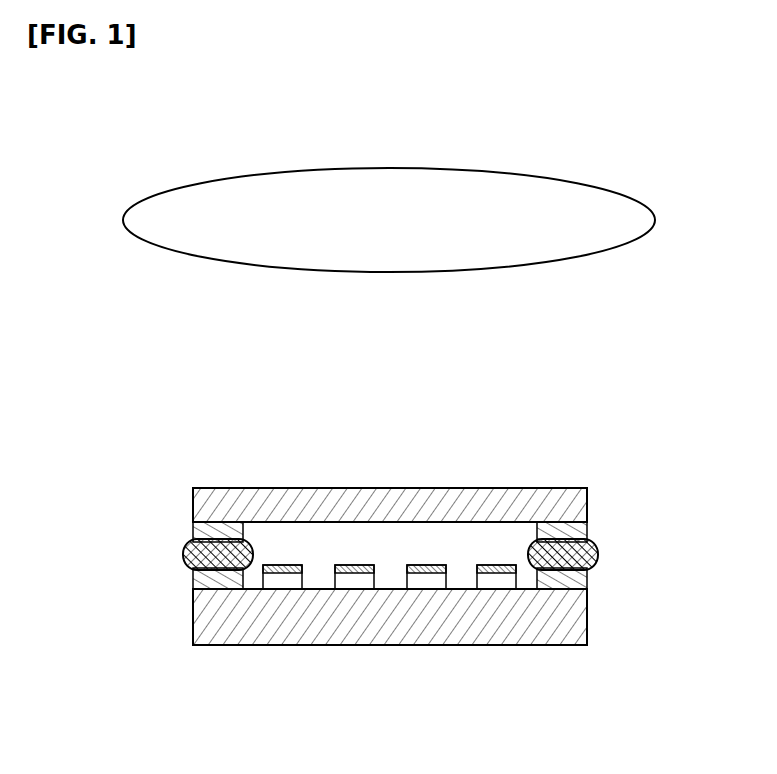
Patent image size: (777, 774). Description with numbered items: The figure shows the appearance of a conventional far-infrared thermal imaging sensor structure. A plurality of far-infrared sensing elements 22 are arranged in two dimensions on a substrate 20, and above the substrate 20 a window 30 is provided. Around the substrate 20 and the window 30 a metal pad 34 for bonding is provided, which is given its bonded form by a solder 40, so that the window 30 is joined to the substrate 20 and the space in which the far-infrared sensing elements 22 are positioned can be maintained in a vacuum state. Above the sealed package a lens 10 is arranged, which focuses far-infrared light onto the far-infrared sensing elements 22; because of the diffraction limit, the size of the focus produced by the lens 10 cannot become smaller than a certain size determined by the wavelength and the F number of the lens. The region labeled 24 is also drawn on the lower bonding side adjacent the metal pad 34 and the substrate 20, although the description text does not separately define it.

The lens 10 is at (607, 202).
The substrate 20 is at (580, 625).
The far-infrared sensing elements 22 is at (352, 573).
The lower bonding pad 24 is at (580, 580).
The window 30 is at (580, 505).
The metal pad 34 is at (580, 530).
The solder 40 is at (585, 556).